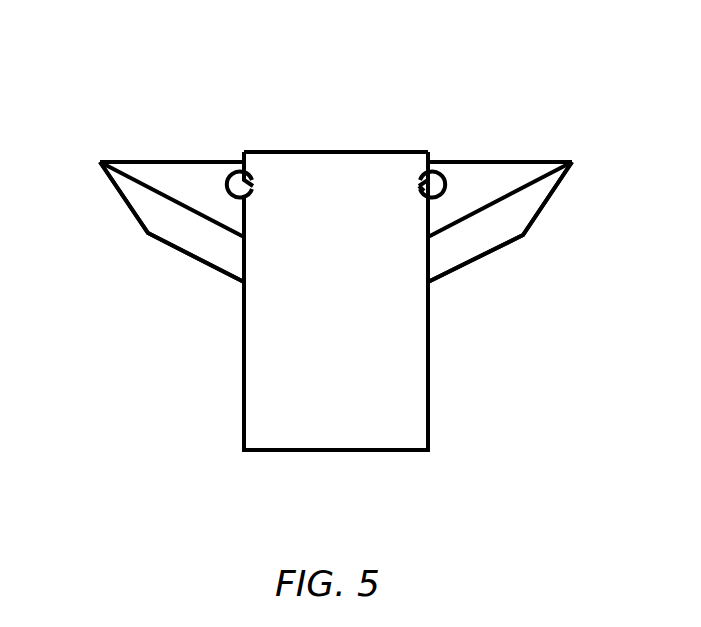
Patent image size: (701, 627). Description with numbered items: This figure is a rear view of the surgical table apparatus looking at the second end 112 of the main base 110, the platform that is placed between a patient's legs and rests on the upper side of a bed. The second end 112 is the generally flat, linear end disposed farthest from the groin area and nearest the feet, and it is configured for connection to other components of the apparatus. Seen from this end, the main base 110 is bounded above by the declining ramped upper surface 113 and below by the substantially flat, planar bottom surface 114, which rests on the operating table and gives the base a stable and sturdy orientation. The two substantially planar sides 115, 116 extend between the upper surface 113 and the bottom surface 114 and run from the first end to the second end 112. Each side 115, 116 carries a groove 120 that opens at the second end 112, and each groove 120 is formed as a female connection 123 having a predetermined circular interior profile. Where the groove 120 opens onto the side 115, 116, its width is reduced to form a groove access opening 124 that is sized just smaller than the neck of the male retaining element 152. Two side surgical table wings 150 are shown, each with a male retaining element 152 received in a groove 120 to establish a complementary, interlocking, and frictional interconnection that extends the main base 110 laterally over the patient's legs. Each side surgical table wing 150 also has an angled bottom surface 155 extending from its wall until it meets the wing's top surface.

The main base 110 is at (382, 397).
The second end 112 is at (336, 240).
The declining ramped upper surface 113 is at (262, 153).
The substantially flat, planar bottom surface 114 is at (332, 452).
The side 115 is at (243, 388).
The side 116 is at (430, 373).
The groove 120 is at (242, 157).
The female connection 123 is at (266, 172).
The groove access opening 124 is at (440, 183).
The side surgical table wing 150 is at (128, 161).
The male retaining element 152 is at (245, 197).
The bottom surface 155 is at (162, 215).